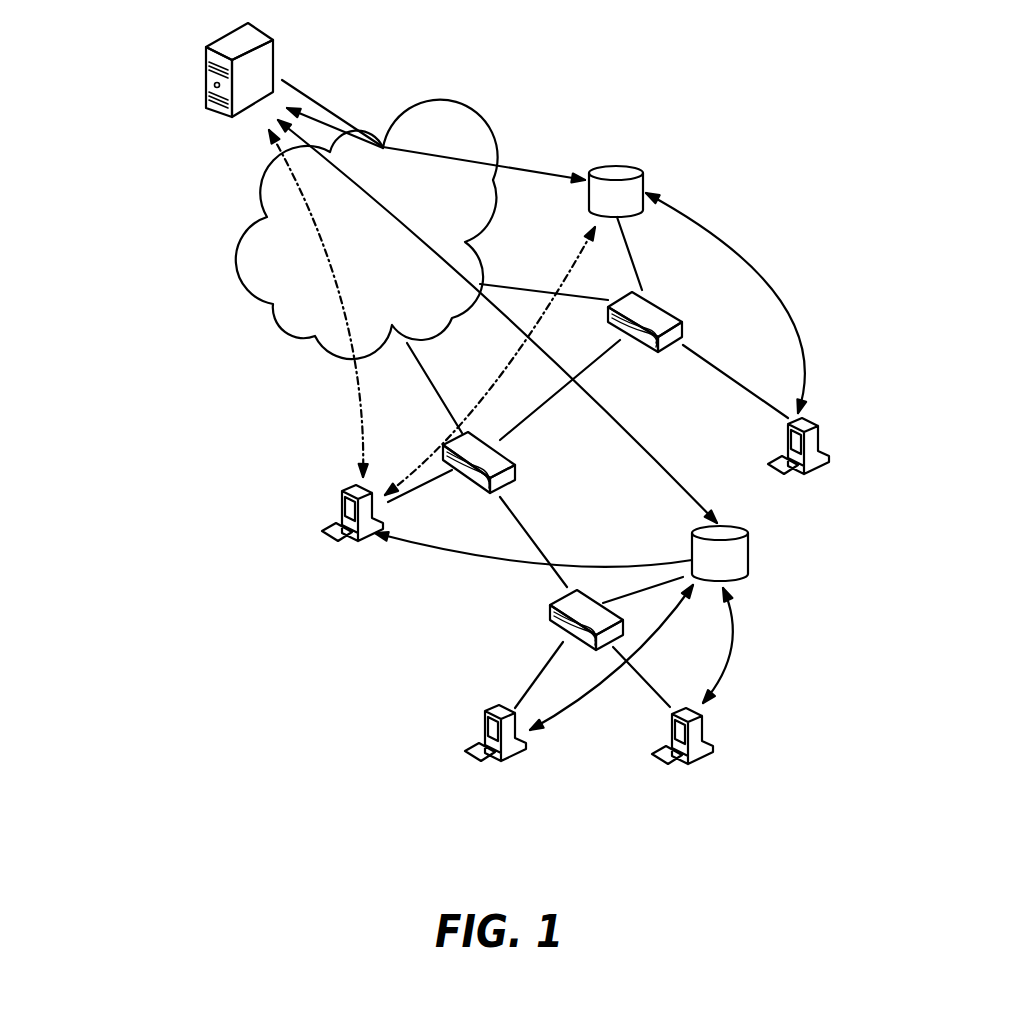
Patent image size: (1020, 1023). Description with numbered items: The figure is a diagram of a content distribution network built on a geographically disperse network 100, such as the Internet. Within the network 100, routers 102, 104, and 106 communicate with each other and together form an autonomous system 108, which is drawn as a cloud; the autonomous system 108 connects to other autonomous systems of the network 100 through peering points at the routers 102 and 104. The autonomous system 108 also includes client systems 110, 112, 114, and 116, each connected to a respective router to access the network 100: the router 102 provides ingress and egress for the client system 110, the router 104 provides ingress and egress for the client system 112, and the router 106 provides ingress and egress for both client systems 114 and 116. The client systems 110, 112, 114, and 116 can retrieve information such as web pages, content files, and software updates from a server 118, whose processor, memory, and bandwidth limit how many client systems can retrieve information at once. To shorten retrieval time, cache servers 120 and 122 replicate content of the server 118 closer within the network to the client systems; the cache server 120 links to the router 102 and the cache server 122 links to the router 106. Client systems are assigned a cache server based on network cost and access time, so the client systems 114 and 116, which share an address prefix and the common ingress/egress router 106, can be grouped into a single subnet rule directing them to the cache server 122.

The network 100 is at (178, 410).
The router 102 is at (650, 305).
The router 104 is at (492, 490).
The router 106 is at (552, 610).
The autonomous system 108 is at (692, 133).
The client system 110 is at (788, 425).
The client system 112 is at (342, 490).
The client system 114 is at (478, 712).
The client system 116 is at (670, 712).
The server 118 is at (213, 46).
The cache server 120 is at (590, 210).
The cache server 122 is at (748, 558).